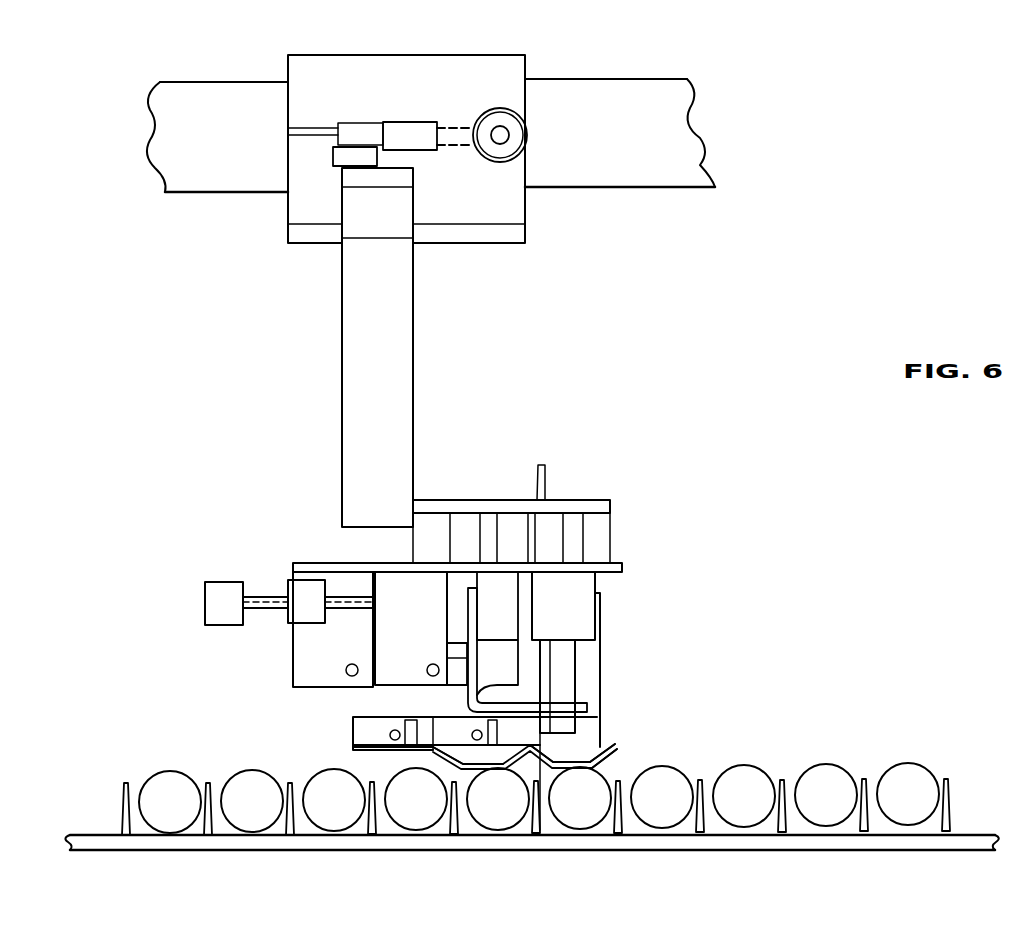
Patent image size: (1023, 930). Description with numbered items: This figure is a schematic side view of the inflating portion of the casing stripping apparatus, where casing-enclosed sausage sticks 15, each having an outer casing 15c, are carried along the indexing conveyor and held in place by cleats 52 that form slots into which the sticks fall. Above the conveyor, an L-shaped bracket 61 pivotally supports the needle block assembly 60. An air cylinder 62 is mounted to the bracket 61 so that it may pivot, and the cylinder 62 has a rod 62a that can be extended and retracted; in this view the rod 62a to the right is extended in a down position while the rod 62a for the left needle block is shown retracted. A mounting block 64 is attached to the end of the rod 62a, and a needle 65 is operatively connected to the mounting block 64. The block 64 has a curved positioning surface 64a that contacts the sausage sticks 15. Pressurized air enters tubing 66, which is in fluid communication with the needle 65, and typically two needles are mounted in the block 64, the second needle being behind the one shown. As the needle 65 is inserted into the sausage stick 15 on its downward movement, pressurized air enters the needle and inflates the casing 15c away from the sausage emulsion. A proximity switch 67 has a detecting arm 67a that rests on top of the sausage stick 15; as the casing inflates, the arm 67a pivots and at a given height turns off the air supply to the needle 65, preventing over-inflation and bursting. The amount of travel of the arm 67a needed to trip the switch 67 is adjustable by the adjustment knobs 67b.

The sausage stick 15 is at (188, 787).
The outer casing 15c is at (157, 780).
The cleat 52 is at (700, 780).
The needle block assembly 60 is at (602, 618).
The L-shaped bracket 61 is at (162, 122).
The air cylinder 62 is at (408, 338).
The rod 62a is at (458, 640).
The mounting block 64 is at (592, 737).
The curved positioning surface 64a is at (550, 775).
The needle 65 is at (555, 778).
The tubing 66 is at (541, 476).
The proximity switch 67 is at (453, 733).
The detecting arm 67a is at (610, 747).
The adjustment knob 67b is at (307, 623).